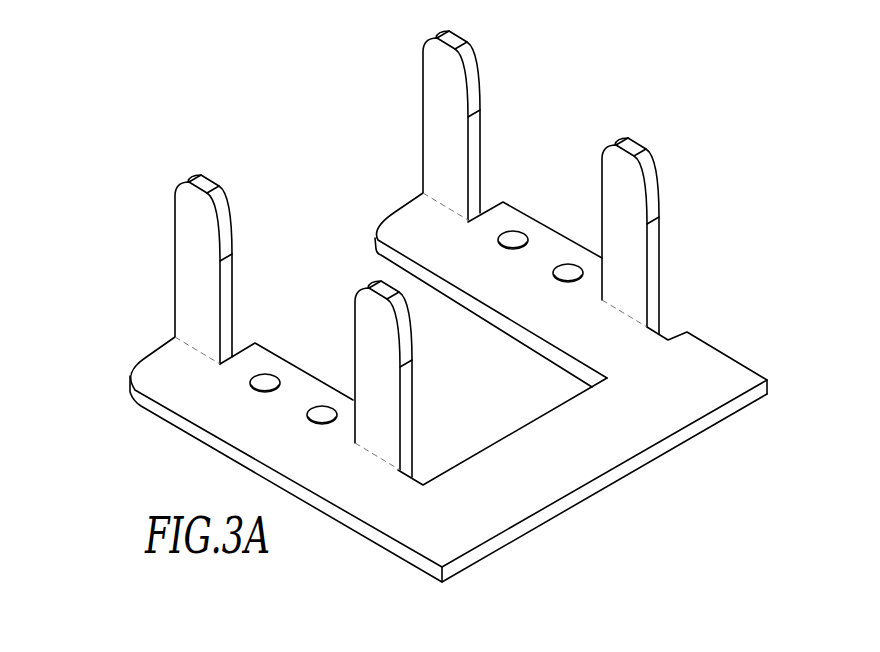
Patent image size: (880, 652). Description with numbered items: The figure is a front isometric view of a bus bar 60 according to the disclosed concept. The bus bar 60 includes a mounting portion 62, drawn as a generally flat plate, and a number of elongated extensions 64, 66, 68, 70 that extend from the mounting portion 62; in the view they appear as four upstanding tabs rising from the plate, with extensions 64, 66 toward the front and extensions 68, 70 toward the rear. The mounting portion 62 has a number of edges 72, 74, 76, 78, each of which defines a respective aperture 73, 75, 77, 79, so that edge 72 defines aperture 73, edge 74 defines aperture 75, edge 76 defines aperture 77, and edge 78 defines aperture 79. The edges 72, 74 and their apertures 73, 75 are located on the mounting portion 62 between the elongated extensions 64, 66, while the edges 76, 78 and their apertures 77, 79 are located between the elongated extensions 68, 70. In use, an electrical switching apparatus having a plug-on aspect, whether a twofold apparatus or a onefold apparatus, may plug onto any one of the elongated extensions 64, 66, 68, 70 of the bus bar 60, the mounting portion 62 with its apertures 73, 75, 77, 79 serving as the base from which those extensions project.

The bus bar 60 is at (110, 309).
The mounting portion 62 is at (237, 438).
The elongated extension 64 is at (384, 359).
The elongated extension 66 is at (187, 217).
The elongated extension 68 is at (637, 221).
The elongated extension 70 is at (437, 86).
The edge 72 is at (315, 406).
The aperture 73 is at (309, 417).
The edge 74 is at (263, 374).
The aperture 75 is at (255, 384).
The edge 76 is at (567, 265).
The aperture 77 is at (556, 275).
The edge 78 is at (511, 232).
The aperture 79 is at (500, 238).